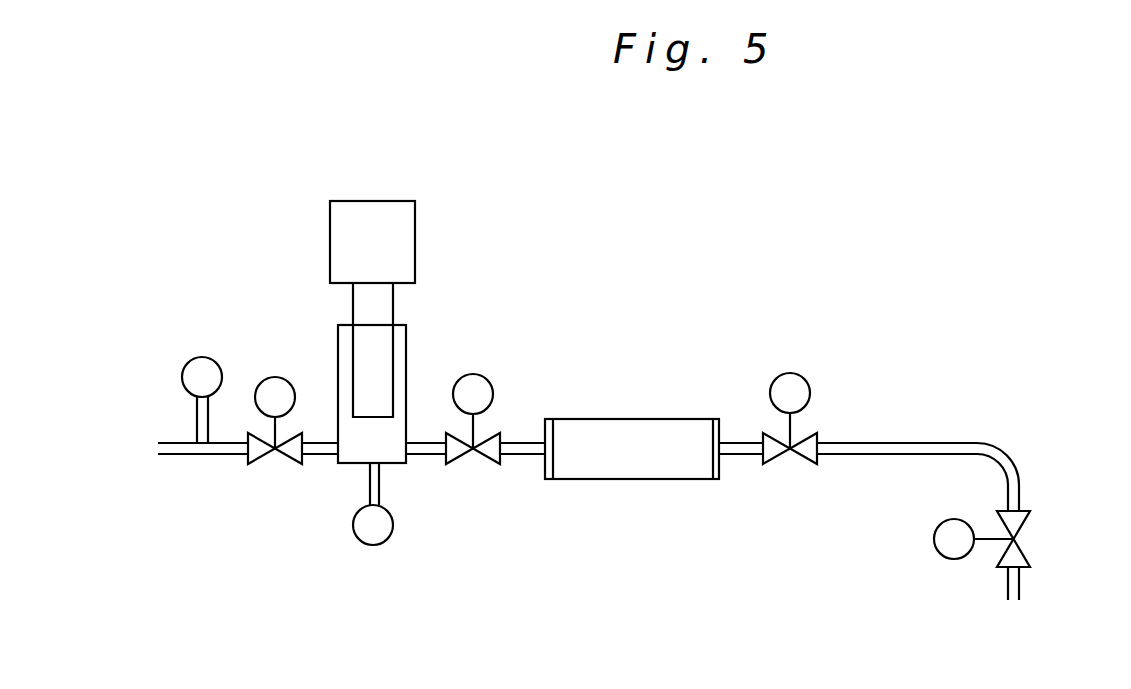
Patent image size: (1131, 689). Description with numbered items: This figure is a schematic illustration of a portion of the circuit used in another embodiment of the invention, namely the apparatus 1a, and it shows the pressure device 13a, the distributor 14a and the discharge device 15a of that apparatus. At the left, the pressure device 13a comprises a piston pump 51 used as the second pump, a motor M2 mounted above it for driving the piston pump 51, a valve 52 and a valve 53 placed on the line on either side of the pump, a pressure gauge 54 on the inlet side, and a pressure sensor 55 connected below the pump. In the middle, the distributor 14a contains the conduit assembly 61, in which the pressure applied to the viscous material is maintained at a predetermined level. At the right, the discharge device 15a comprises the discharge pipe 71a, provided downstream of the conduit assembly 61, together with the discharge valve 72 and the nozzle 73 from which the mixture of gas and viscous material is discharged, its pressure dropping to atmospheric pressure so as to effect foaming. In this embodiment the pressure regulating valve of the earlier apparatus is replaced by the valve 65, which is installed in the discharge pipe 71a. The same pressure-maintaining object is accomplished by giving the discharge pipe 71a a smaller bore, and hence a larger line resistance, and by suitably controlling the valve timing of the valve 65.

The apparatus 1a is at (629, 160).
The pressure device 13a is at (278, 181).
The distributor 14a is at (650, 378).
The discharge device 15a is at (993, 392).
The motor M2 is at (415, 242).
The piston pump 51 is at (406, 338).
The valve 52 is at (262, 464).
The valve 53 is at (486, 464).
The pressure gauge 54 is at (201, 357).
The pressure sensor 55 is at (372, 546).
The conduit assembly 61 is at (665, 480).
The valve 65 is at (783, 464).
The discharge pipe 71a is at (880, 456).
The discharge valve 72 is at (1023, 520).
The nozzle 73 is at (1007, 580).